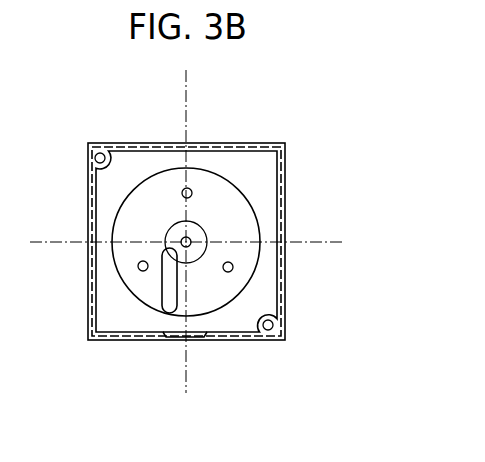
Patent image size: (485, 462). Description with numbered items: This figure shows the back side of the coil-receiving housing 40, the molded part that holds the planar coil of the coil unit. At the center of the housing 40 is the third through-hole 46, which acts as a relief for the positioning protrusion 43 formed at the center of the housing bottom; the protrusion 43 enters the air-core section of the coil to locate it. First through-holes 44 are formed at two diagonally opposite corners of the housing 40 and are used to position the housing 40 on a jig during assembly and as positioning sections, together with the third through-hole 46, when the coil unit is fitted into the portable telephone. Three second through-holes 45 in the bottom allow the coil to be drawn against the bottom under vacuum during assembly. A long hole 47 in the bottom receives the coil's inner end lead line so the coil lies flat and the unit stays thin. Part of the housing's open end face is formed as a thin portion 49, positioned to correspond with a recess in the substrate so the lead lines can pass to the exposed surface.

The coil-receiving housing 40 is at (306, 267).
The positioning protrusion 43 is at (191, 240).
The first through-holes 44 is at (88, 148).
The second through-holes 45 is at (190, 189).
The third through-hole 46 is at (207, 241).
The long hole 47 is at (162, 308).
The thin portion 49 is at (212, 341).